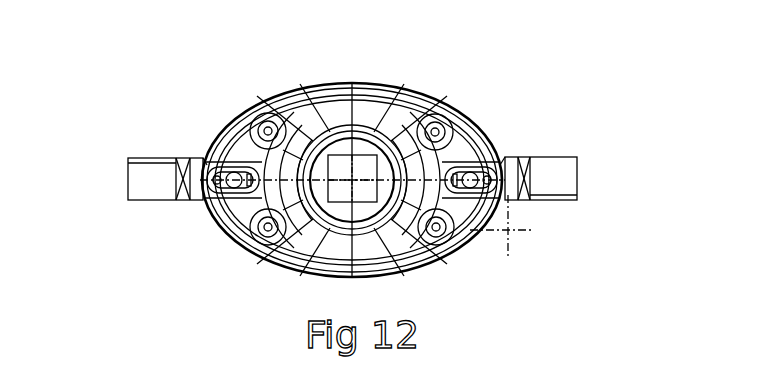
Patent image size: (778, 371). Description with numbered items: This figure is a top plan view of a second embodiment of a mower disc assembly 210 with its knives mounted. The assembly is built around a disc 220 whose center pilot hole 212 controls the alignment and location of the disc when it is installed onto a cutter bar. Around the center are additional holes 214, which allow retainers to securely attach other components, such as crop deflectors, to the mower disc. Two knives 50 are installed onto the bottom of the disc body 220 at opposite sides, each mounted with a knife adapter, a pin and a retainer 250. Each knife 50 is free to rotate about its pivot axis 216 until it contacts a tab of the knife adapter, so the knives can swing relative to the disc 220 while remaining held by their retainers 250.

The mower disc assembly 210 is at (593, 84).
The center pilot hole 212 is at (342, 155).
The additional holes 214 is at (252, 118).
The pivot axis 216 is at (488, 150).
The disc 220 is at (330, 80).
The knives 50 is at (147, 180).
The retainer 250 is at (575, 240).